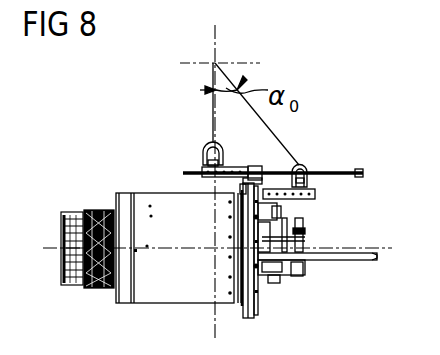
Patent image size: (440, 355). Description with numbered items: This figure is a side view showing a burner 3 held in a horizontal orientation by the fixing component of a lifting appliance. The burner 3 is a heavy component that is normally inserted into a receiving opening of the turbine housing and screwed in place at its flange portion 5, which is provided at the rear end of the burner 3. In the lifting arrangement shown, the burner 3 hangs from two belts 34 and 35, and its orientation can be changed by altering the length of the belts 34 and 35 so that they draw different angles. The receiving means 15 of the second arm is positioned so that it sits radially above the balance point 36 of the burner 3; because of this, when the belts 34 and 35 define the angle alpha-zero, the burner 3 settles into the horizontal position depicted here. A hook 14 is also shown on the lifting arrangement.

The burner 3 is at (124, 181).
The flange portion 5 is at (255, 300).
The second lifting hook 14 is at (308, 180).
The receiving means 15 is at (205, 156).
The belt 34 is at (213, 125).
The belt 35 is at (280, 139).
The balance point 36 is at (214, 250).